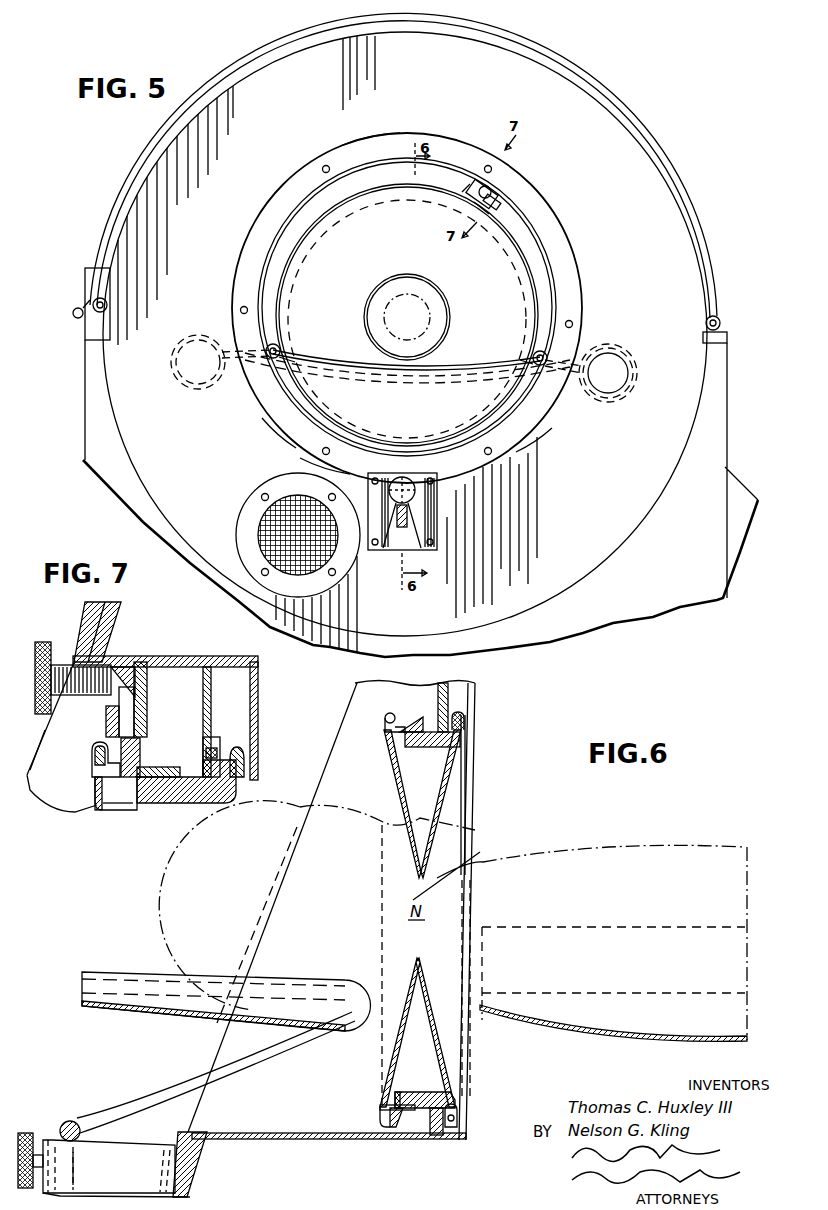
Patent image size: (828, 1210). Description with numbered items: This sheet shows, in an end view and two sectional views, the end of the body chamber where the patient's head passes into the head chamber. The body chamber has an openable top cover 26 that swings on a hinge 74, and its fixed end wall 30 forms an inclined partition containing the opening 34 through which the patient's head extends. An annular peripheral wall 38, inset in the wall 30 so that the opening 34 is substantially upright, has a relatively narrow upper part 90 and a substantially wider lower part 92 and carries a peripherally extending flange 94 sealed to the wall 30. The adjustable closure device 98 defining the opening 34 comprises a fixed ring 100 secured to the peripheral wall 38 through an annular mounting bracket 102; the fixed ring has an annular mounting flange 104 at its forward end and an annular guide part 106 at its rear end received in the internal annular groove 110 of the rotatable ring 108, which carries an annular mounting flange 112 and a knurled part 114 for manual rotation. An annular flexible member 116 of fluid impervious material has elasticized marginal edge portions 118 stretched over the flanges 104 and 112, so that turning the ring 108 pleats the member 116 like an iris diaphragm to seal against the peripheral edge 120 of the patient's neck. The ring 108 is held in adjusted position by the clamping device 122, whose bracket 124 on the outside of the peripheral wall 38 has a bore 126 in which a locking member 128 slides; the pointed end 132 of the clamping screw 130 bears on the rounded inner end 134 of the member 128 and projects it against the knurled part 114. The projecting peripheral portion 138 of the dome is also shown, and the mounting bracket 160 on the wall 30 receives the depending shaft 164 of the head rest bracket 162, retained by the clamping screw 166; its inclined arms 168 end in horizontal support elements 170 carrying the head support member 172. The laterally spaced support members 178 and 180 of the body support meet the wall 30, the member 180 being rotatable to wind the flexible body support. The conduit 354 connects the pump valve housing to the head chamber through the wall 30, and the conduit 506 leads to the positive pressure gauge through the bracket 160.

In FIG. 5, the openable top cover 26 is at (578, 72).
In FIG. 5, the end wall 30 is at (605, 127).
In FIG. 7, the end wall 30 is at (120, 617).
In FIG. 6, the end wall 30 is at (197, 1158).
In FIG. 5, the opening 34 is at (437, 312).
In FIG. 6, the opening 34 is at (453, 953).
In FIG. 7, the peripheral wall 38 is at (172, 660).
In FIG. 6, the peripheral wall 38 is at (330, 1141).
In FIG. 5, the hinge 74 is at (73, 308).
In FIG. 7, the upper part 90 is at (218, 661).
In FIG. 6, the lower part 92 is at (287, 1139).
In FIG. 5, the peripherally extending flange 94 is at (361, 151).
In FIG. 7, the peripherally extending flange 94 is at (88, 610).
In FIG. 5, the adjustable closure device 98 is at (536, 266).
In FIG. 6, the adjustable closure device 98 is at (460, 802).
In FIG. 7, the fixed ring 100 is at (175, 800).
In FIG. 6, the fixed ring 100 is at (423, 1090).
In FIG. 7, the annular mounting bracket 102 is at (210, 700).
In FIG. 6, the annular mounting bracket 102 is at (430, 1134).
In FIG. 7, the annular mounting flange 104 is at (242, 758).
In FIG. 6, the annular mounting flange 104 is at (456, 1118).
In FIG. 7, the annular guide part 106 is at (133, 803).
In FIG. 6, the annular guide part 106 is at (395, 1094).
In FIG. 7, the rotatable ring 108 is at (140, 748).
In FIG. 6, the rotatable ring 108 is at (393, 1120).
In FIG. 7, the internal annular groove 110 is at (137, 750).
In FIG. 7, the annular mounting flange 112 is at (97, 758).
In FIG. 6, the annular mounting flange 112 is at (380, 1120).
In FIG. 5, the annular knurled part 114 is at (452, 192).
In FIG. 6, the annular knurled part 114 is at (410, 723).
In FIG. 5, the annular flexible member 116 is at (374, 254).
In FIG. 7, the annular flexible member 116 is at (97, 802).
In FIG. 6, the annular flexible member 116 is at (450, 782).
In FIG. 6, the elasticized marginal edge portions 118 is at (392, 713).
In FIG. 5, the peripheral edge 120 is at (443, 323).
In FIG. 6, the peripheral edge 120 is at (417, 961).
In FIG. 7, the clamping device 122 is at (82, 712).
In FIG. 5, the bracket 124 is at (498, 203).
In FIG. 7, the bracket 124 is at (113, 712).
In FIG. 7, the bore 126 is at (134, 690).
In FIG. 5, the locking member 128 is at (482, 211).
In FIG. 7, the locking member 128 is at (147, 708).
In FIG. 5, the clamping screw 130 is at (490, 188).
In FIG. 7, the clamping screw 130 is at (65, 660).
In FIG. 7, the pointed end 132 is at (120, 677).
In FIG. 7, the rounded inner end 134 is at (133, 684).
In FIG. 5, the projecting peripheral portion 138 is at (271, 207).
In FIG. 5, the mounting bracket 160 is at (437, 514).
In FIG. 6, the mounting bracket 160 is at (48, 1140).
In FIG. 5, the head rest bracket 162 is at (317, 437).
In FIG. 6, the head rest bracket 162 is at (160, 1088).
In FIG. 5, the depending shaft 164 is at (388, 552).
In FIG. 6, the depending shaft 164 is at (73, 1164).
In FIG. 5, the clamping screw 166 is at (415, 497).
In FIG. 6, the clamping screw 166 is at (27, 1133).
In FIG. 5, the inclined arms 168 is at (303, 418).
In FIG. 5, the support elements 170 is at (277, 347).
In FIG. 6, the support elements 170 is at (122, 973).
In FIG. 5, the head support member 172 is at (377, 365).
In FIG. 6, the head support member 172 is at (110, 1014).
In FIG. 5, the support member 178 is at (190, 385).
In FIG. 5, the support member 180 is at (610, 388).
In FIG. 5, the conduit 354 is at (283, 523).
In FIG. 5, the conduit 506 is at (423, 552).